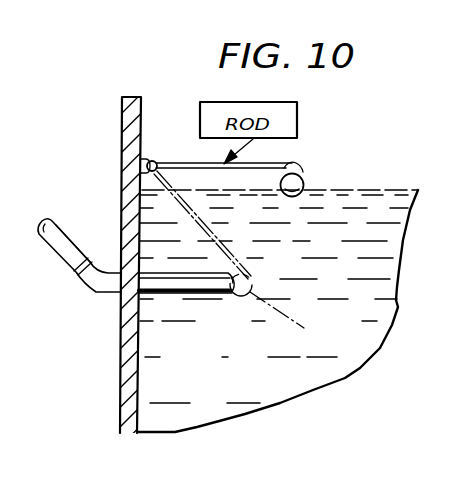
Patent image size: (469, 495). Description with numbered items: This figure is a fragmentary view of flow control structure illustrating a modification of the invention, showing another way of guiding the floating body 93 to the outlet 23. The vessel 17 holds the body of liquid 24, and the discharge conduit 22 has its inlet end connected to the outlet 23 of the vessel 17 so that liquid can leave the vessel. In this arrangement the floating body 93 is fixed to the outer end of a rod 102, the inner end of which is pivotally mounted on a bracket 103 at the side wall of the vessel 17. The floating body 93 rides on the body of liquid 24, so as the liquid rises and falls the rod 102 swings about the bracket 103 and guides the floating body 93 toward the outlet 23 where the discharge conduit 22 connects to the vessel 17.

The vessel 17 is at (136, 383).
The discharge conduit 22 is at (56, 248).
The outlet 23 is at (244, 293).
The body of liquid 24 is at (153, 402).
The floating body 93 is at (305, 178).
The rod 102 is at (283, 168).
The bracket 103 is at (156, 160).